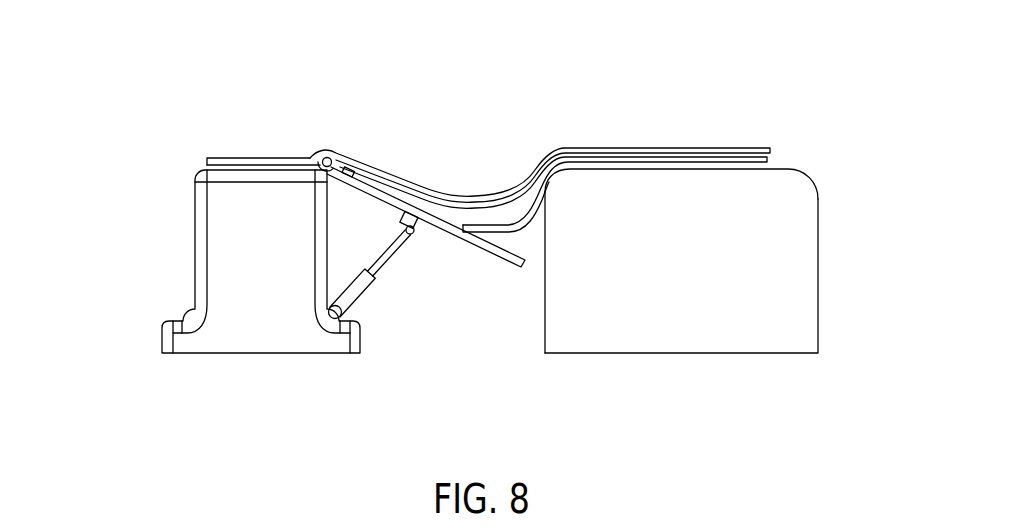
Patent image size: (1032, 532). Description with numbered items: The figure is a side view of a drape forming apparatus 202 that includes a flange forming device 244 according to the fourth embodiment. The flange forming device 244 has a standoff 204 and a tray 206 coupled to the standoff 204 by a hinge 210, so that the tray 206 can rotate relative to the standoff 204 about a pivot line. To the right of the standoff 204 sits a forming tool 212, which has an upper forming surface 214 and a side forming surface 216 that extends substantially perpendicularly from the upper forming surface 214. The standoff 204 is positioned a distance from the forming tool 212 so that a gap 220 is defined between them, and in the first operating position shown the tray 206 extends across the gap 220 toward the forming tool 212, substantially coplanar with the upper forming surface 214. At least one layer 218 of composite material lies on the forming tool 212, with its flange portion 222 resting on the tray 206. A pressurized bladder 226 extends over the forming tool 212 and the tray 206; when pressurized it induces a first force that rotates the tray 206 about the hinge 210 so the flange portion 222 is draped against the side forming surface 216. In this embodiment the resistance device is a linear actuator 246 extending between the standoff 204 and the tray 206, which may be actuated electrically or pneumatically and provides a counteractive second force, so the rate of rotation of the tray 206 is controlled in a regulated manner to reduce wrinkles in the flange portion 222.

The drape forming apparatus 202 is at (603, 185).
The standoff 204 is at (195, 232).
The tray 206 is at (494, 258).
The hinge 210 is at (333, 151).
The forming tool 212 is at (821, 204).
The upper forming surface 214 is at (786, 169).
The side forming surface 216 is at (545, 327).
The layer of composite material 218 is at (770, 161).
The gap 220 is at (417, 261).
The flange portion 222 is at (508, 214).
The pressurized bladder 226 is at (738, 148).
The flange forming device 244 is at (204, 234).
The linear actuator 246 is at (397, 275).